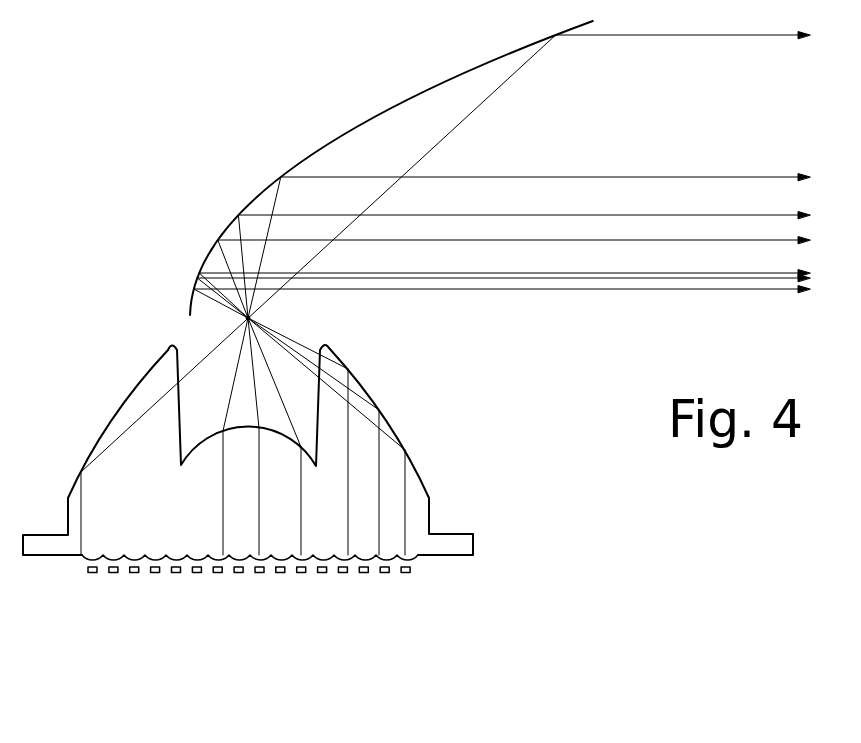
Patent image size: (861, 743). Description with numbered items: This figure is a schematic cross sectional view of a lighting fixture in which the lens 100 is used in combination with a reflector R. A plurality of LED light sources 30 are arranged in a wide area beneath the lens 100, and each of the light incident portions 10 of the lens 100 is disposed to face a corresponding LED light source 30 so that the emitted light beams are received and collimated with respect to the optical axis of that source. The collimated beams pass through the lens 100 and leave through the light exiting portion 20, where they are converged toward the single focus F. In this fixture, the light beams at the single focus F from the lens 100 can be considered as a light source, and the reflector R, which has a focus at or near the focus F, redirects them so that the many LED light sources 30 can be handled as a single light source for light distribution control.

The lens 100 is at (396, 366).
The light exiting portion 20 is at (396, 411).
The light incident portions 10 is at (86, 557).
The LED light sources 30 is at (113, 574).
The reflector R is at (361, 121).
The focus F is at (251, 318).